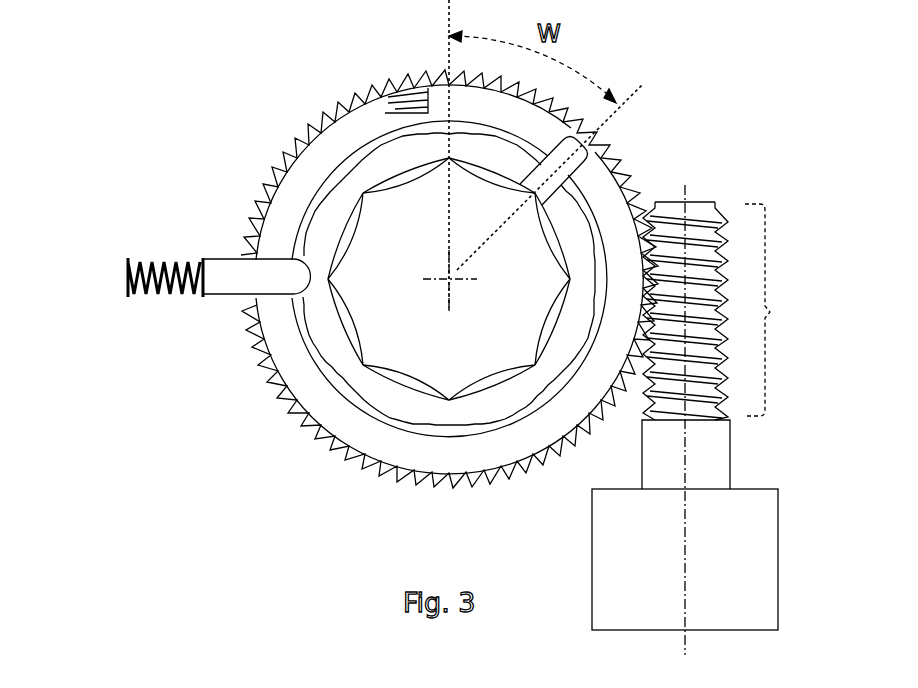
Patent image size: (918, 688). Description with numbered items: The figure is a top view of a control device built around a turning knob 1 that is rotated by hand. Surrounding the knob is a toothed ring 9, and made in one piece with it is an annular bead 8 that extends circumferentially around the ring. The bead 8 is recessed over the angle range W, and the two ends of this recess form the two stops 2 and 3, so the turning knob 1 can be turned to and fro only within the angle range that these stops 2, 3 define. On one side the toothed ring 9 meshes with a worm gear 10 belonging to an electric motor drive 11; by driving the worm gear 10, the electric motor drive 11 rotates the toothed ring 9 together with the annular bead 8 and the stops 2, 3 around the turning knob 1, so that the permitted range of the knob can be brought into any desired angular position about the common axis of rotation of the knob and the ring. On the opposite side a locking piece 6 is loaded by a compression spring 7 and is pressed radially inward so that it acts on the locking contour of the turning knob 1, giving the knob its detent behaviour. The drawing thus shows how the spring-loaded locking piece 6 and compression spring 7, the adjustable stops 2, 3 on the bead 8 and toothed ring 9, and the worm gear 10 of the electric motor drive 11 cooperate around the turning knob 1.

The turning knob 1 is at (393, 337).
The stop 2 is at (388, 92).
The stop 3 is at (623, 193).
The locking piece 6 is at (235, 282).
The compression spring 7 is at (114, 278).
The annular bead 8 is at (282, 210).
The toothed ring 9 is at (268, 150).
The worm gear 10 is at (724, 420).
The electric motor drive 11 is at (760, 566).